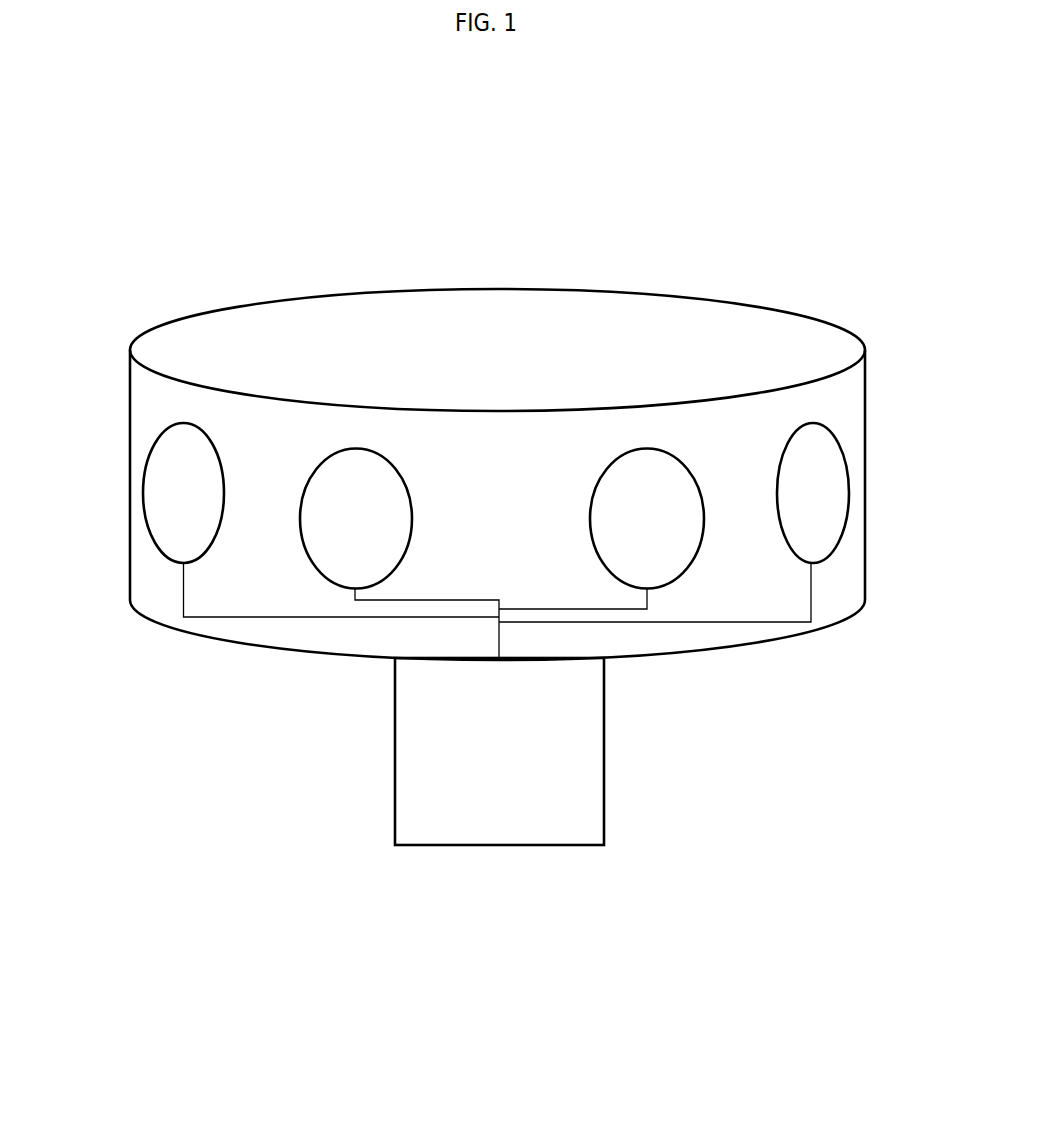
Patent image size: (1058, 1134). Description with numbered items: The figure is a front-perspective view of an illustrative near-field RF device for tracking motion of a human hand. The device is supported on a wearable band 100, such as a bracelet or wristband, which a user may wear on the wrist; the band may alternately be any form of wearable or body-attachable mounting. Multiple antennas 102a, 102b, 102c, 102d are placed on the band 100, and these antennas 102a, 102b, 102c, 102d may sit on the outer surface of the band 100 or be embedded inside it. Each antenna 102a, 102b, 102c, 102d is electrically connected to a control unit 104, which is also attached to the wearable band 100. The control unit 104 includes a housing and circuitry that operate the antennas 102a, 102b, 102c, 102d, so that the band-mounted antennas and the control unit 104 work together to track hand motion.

The wearable band 100 is at (497, 440).
The antenna 102a is at (168, 423).
The antenna 102b is at (325, 450).
The antenna 102c is at (682, 462).
The antenna 102d is at (813, 423).
The control unit 104 is at (500, 845).